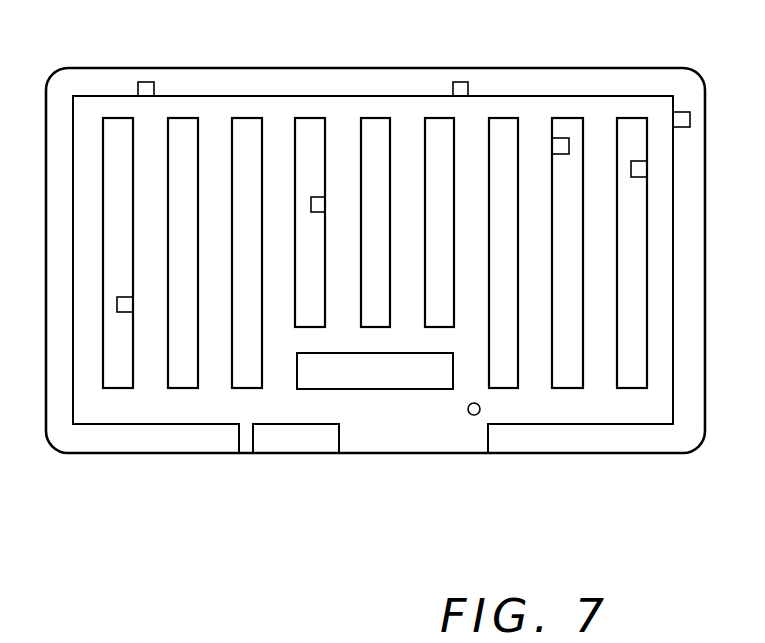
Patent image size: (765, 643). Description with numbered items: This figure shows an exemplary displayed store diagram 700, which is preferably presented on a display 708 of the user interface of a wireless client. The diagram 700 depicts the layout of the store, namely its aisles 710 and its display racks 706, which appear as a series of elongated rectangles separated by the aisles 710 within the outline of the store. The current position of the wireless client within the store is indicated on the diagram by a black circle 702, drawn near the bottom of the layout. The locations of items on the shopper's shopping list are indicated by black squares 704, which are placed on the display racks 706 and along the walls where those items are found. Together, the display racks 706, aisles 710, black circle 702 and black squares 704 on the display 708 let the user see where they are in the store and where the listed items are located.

The displayed store diagram 700 is at (622, 557).
The black circle 702 is at (470, 414).
The black squares 704 is at (463, 82).
The display racks 706 is at (240, 118).
The display 708 is at (115, 67).
The aisles 710 is at (337, 125).